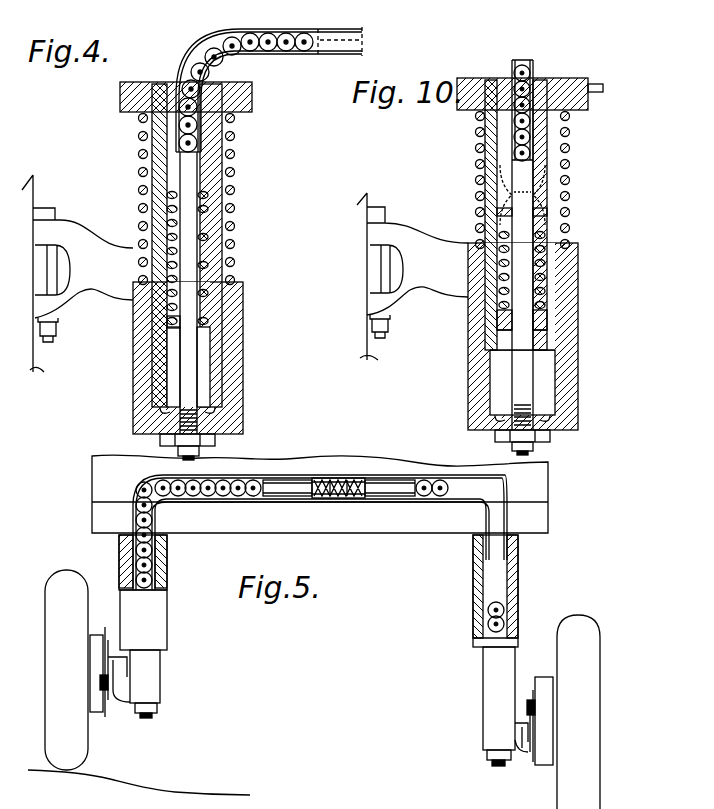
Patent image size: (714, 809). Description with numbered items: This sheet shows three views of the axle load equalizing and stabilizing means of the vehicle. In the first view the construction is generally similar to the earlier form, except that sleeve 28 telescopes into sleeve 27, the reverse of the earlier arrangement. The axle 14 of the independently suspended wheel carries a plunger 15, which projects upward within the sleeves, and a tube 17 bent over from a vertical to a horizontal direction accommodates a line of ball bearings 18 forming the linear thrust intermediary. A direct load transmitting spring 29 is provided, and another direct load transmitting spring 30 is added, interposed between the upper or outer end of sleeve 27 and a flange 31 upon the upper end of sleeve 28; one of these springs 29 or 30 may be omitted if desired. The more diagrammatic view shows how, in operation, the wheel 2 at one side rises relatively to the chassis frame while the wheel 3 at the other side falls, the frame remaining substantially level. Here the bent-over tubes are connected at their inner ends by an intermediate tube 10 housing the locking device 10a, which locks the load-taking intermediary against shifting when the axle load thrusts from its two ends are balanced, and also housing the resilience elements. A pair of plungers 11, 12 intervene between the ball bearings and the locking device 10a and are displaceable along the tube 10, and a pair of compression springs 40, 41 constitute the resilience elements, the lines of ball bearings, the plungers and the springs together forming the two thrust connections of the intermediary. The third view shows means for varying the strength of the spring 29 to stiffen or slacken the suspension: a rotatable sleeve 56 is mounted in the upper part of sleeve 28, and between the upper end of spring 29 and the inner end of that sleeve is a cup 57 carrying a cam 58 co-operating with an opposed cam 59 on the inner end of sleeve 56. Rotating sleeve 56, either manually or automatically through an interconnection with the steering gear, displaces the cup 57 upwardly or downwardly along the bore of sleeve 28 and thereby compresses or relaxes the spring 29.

In FIG. 5, the wheel 2 is at (62, 576).
In FIG. 5, the wheel 3 is at (566, 668).
In FIG. 5, the intermediate tube 10 is at (334, 498).
In FIG. 5, the locking device 10a is at (342, 478).
In FIG. 5, the plunger 11 is at (282, 488).
In FIG. 5, the plunger 12 is at (397, 487).
In FIG. 4, the axle 14 is at (77, 285).
In FIG. 10, the axle 14 is at (386, 296).
In FIG. 5, the axle 14 is at (110, 700).
In FIG. 4, the plunger 15 is at (186, 357).
In FIG. 4, the tube 17 is at (238, 36).
In FIG. 10, the tube 17 is at (514, 70).
In FIG. 5, the tube 17 is at (140, 490).
In FIG. 4, the line of ball bearings 18 is at (312, 55).
In FIG. 10, the line of ball bearings 18 is at (532, 66).
In FIG. 5, the line of ball bearings 18 is at (163, 500).
In FIG. 4, the sleeve 27 is at (240, 306).
In FIG. 10, the sleeve 27 is at (480, 363).
In FIG. 5, the sleeve 27 is at (150, 680).
In FIG. 4, the sleeve 28 is at (215, 233).
In FIG. 10, the sleeve 28 is at (497, 322).
In FIG. 5, the sleeve 28 is at (160, 613).
In FIG. 4, the spring 29 is at (168, 212).
In FIG. 10, the spring 29 is at (500, 240).
In FIG. 4, the direct load transmitting spring 30 is at (236, 170).
In FIG. 10, the direct load transmitting spring 30 is at (478, 150).
In FIG. 4, the flange 31 is at (253, 103).
In FIG. 10, the flange 31 is at (462, 100).
In FIG. 5, the compression spring 40 is at (322, 478).
In FIG. 5, the compression spring 41 is at (362, 498).
In FIG. 10, the rotatable sleeve 56 is at (535, 138).
In FIG. 10, the cup 57 is at (545, 213).
In FIG. 10, the cam 58 is at (512, 197).
In FIG. 10, the cam 59 is at (533, 186).